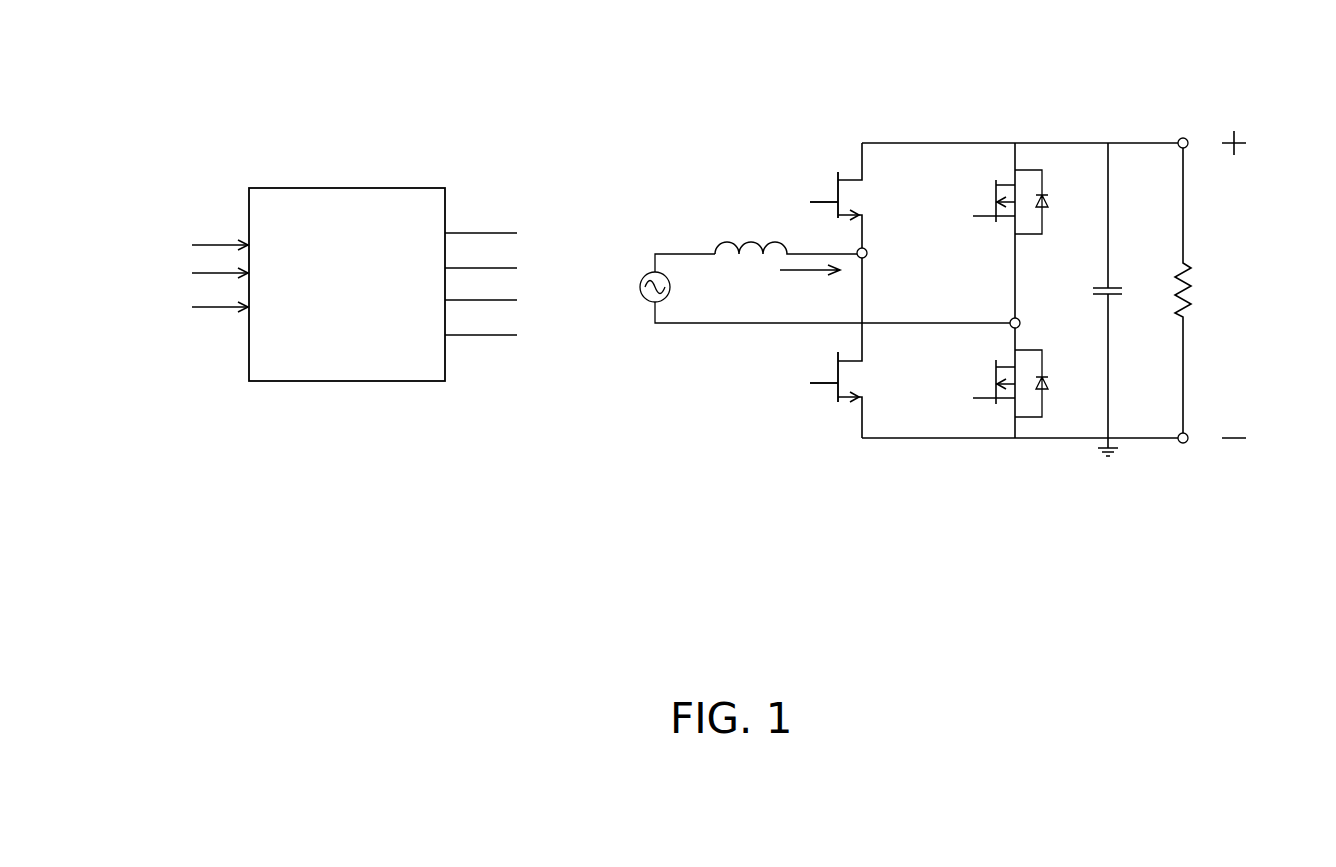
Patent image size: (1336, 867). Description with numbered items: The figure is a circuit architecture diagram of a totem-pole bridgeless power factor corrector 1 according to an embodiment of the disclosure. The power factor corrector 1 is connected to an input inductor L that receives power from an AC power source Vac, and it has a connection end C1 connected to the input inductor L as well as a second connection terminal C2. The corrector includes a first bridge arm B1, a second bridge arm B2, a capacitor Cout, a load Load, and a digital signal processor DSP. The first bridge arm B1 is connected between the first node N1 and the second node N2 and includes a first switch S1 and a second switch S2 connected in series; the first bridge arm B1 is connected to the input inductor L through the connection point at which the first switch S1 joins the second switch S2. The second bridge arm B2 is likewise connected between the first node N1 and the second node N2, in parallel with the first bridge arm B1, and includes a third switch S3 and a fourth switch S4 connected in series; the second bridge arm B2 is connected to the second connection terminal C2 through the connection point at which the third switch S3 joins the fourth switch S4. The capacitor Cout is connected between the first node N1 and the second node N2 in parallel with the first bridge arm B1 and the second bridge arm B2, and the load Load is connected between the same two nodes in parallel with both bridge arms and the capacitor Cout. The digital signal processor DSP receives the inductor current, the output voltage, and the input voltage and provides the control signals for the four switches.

The totem-pole bridgeless power factor corrector 1 is at (361, 55).
The digital signal processor DSP is at (342, 284).
The AC power source Vac is at (805, 288).
The input inductor L is at (788, 251).
The first bridge arm B1 is at (841, 141).
The second bridge arm B2 is at (1007, 136).
The first switch S1 is at (816, 195).
The second switch S2 is at (816, 377).
The third switch S3 is at (999, 202).
The fourth switch S4 is at (999, 383).
The connection end C1 is at (878, 255).
The second connection terminal C2 is at (1031, 323).
The capacitor Cout is at (1078, 299).
The load Load is at (1193, 284).
The first node N1 is at (1185, 129).
The second node N2 is at (1185, 454).